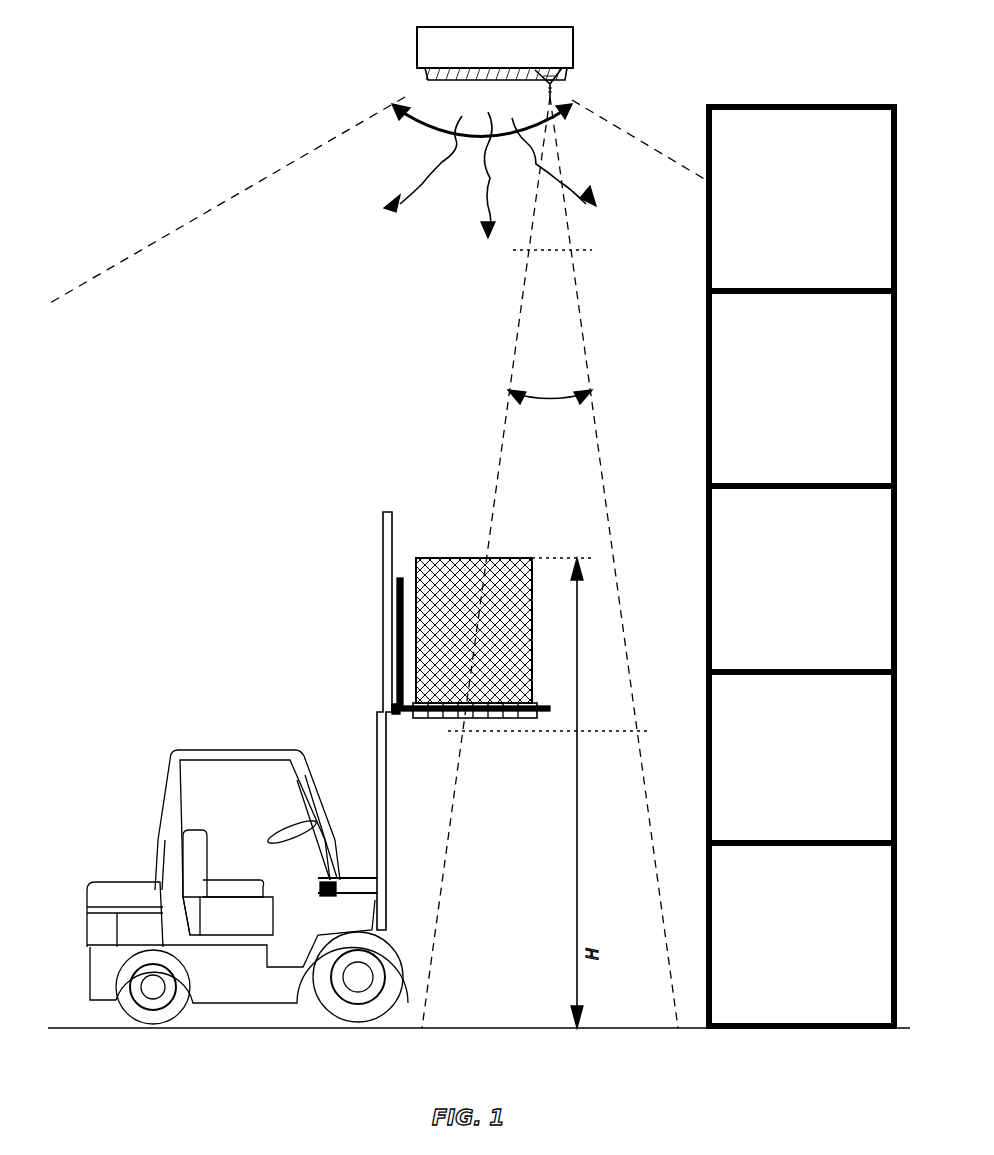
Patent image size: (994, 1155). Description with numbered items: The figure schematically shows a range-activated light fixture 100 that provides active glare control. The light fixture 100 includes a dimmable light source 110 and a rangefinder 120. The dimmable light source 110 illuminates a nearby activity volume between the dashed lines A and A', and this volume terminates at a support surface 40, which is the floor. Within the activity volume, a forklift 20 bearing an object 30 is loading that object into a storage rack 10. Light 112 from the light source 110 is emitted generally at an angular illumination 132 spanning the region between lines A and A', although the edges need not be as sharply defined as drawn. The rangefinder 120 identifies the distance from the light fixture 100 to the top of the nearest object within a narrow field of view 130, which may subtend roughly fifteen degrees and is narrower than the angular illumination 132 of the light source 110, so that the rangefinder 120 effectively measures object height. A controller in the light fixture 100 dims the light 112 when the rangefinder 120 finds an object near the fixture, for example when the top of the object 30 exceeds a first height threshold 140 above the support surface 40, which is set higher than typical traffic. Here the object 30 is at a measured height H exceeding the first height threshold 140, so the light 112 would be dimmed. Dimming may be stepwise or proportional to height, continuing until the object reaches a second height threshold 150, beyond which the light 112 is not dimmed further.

The storage rack 10 is at (815, 104).
The forklift 20 is at (191, 748).
The object 30 is at (463, 558).
The support surface 40 is at (471, 1028).
The range-activated light fixture 100 is at (432, 48).
The dimmable light source 110 is at (433, 82).
The light 112 is at (490, 167).
The rangefinder 120 is at (565, 72).
The field of view 130 is at (560, 400).
The angular illumination 132 is at (412, 134).
The first height threshold 140 is at (500, 733).
The second height threshold 150 is at (586, 252).